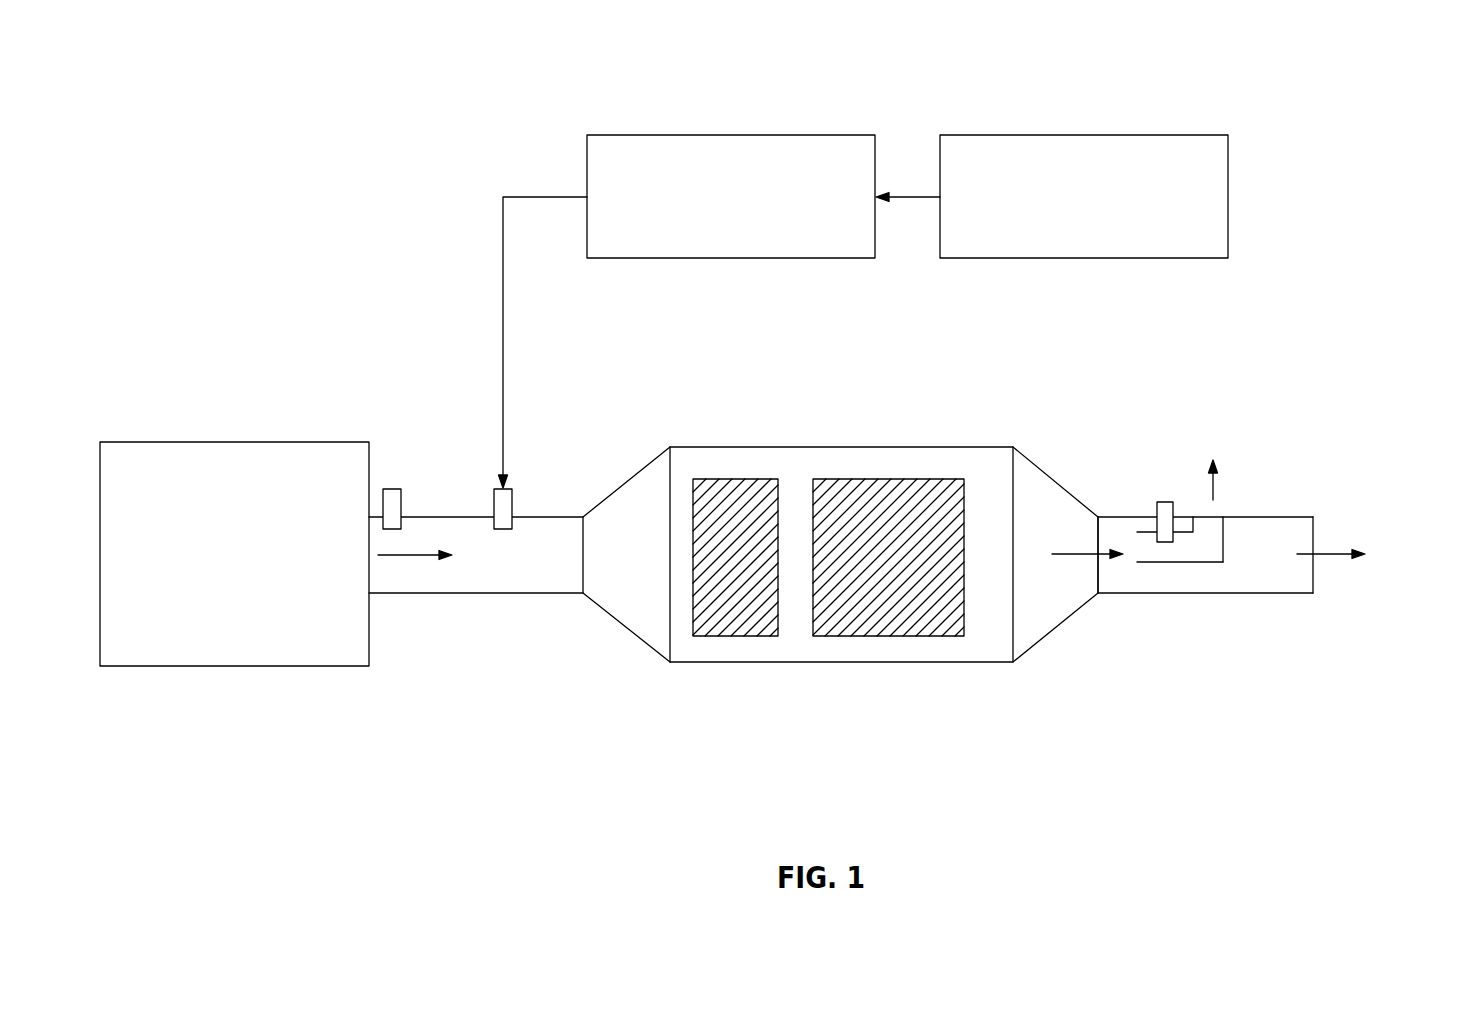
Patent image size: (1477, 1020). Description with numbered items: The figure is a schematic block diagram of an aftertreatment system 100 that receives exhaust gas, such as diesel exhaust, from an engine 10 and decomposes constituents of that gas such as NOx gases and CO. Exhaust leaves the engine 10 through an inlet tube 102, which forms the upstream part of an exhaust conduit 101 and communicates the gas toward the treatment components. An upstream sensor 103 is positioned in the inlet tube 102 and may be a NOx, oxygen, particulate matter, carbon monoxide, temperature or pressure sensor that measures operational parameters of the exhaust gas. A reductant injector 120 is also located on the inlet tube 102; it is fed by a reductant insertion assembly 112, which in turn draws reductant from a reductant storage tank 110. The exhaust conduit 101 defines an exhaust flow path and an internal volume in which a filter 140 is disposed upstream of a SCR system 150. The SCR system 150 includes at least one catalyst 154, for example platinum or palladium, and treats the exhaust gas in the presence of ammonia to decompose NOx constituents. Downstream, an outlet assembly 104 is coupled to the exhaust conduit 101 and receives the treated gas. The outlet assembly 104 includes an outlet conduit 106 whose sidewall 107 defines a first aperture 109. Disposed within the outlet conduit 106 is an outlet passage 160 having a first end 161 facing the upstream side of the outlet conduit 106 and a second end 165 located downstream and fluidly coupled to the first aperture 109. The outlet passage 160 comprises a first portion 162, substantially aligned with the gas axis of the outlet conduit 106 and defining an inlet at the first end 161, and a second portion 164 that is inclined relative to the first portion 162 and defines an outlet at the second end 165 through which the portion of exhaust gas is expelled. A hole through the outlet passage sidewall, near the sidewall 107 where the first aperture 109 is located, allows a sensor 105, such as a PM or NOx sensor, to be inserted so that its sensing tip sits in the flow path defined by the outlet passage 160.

The aftertreatment system 100 is at (1108, 74).
The engine 10 is at (258, 584).
The inlet tube 102 is at (452, 593).
The upstream sensor 103 is at (401, 502).
The reductant injector 120 is at (512, 502).
The reductant insertion assembly 112 is at (753, 240).
The reductant storage tank 110 is at (1107, 240).
The exhaust conduit 101 is at (697, 672).
The filter 140 is at (758, 625).
The SCR system 150 is at (895, 620).
The catalyst 154 is at (942, 625).
The outlet assembly 104 is at (1209, 577).
The sensor 105 is at (1167, 502).
The outlet conduit 106 is at (1245, 590).
The sidewall 107 is at (1293, 517).
The first aperture 109 is at (1218, 517).
The outlet passage 160 is at (1230, 569).
The first end 161 is at (1138, 534).
The first portion 162 is at (1152, 563).
The second portion 164 is at (1227, 547).
The second end 165 is at (1222, 533).